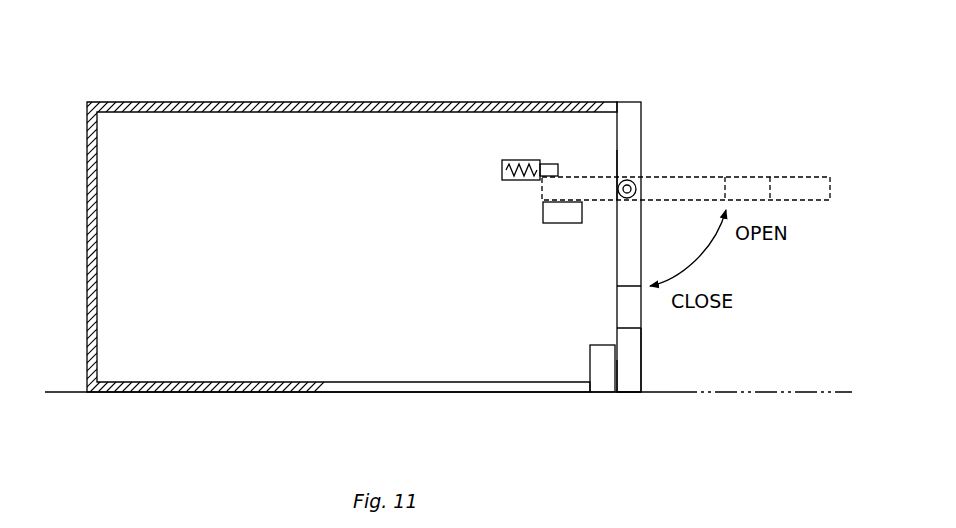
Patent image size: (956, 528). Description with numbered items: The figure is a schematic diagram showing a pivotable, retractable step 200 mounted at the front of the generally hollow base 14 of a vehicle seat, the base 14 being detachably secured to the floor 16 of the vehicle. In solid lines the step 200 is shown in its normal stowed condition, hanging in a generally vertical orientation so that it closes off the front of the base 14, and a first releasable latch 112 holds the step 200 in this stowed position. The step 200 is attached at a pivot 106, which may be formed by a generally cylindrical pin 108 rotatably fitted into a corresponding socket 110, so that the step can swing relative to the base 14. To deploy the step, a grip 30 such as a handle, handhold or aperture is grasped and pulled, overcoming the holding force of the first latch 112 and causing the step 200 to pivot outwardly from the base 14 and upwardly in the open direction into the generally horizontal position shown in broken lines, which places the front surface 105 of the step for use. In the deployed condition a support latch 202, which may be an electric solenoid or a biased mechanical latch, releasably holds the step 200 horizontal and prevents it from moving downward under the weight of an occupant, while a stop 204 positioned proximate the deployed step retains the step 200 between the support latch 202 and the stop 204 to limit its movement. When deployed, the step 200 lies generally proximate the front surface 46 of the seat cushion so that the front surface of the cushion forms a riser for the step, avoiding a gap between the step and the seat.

The base 14 is at (388, 101).
The floor 16 is at (756, 396).
The step 200 is at (651, 118).
The pivot 106 is at (610, 170).
The socket 110 is at (631, 180).
The pin 108 is at (630, 199).
The support latch 202 is at (512, 181).
The stop 204 is at (560, 224).
The grip 30 is at (630, 306).
The first releasable latch 112 is at (598, 358).
The front surface of seat cushion 46 is at (642, 350).
The front surface 105 is at (642, 372).